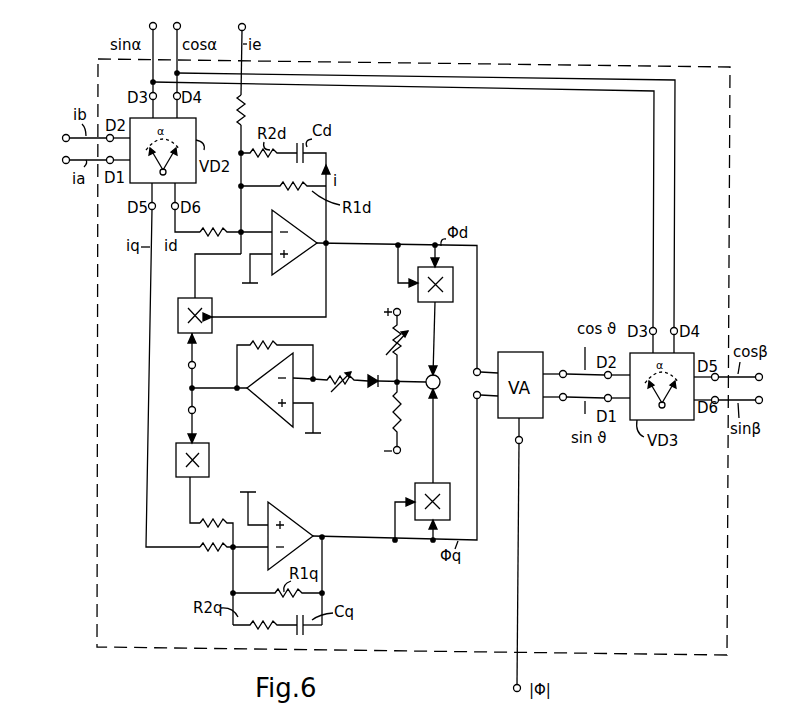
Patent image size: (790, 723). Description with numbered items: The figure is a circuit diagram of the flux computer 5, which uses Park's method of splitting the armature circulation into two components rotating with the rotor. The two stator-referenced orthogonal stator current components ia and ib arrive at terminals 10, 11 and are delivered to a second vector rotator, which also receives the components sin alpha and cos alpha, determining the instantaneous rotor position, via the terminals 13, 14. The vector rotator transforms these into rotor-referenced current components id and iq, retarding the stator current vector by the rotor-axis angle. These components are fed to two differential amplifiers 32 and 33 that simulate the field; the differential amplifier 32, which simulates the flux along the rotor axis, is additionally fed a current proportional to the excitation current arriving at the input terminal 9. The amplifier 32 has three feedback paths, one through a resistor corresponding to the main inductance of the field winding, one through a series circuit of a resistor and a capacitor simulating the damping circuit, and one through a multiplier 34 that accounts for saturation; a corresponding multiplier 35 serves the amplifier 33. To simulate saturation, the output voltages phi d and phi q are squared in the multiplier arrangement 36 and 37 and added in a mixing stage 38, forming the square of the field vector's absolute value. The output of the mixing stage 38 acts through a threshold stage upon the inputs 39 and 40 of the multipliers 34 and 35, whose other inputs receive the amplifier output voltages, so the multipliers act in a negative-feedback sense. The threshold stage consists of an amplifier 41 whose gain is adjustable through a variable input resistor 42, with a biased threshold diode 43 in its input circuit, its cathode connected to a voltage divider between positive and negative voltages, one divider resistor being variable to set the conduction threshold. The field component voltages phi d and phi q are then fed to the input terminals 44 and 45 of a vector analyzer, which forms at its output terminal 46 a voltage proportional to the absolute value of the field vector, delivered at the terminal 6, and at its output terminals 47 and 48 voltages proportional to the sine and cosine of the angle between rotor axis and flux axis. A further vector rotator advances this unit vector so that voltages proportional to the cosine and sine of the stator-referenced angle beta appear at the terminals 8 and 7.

The flux computer 5 is at (400, 62).
The terminal 6 is at (509, 689).
The terminal 7 is at (735, 400).
The terminal 8 is at (735, 377).
The input terminal 9 is at (241, 129).
The terminal 10 is at (75, 160).
The terminal 11 is at (75, 138).
The terminal 13 is at (398, 165).
The terminal 14 is at (421, 165).
The differential amplifier 32 is at (283, 215).
The differential amplifier 33 is at (294, 519).
The multiplier 34 is at (194, 299).
The multiplier 35 is at (209, 462).
The multiplier arrangement 36 is at (440, 303).
The multiplier arrangement 37 is at (437, 483).
The mixing stage 38 is at (423, 373).
The input 39 is at (205, 366).
The input 40 is at (205, 411).
The amplifier 41 is at (269, 404).
The variable input resistor 42 is at (340, 393).
The threshold diode 43 is at (372, 374).
The input terminal 44 is at (474, 372).
The input terminal 45 is at (474, 395).
The output terminal 46 is at (531, 551).
The output terminal 47 is at (574, 365).
The output terminal 48 is at (574, 410).